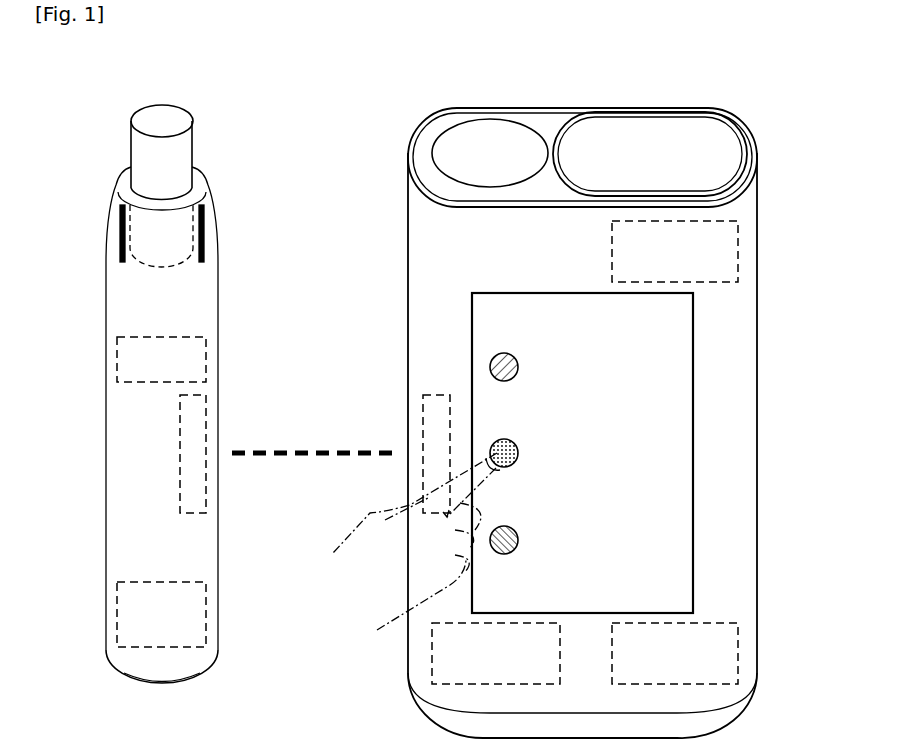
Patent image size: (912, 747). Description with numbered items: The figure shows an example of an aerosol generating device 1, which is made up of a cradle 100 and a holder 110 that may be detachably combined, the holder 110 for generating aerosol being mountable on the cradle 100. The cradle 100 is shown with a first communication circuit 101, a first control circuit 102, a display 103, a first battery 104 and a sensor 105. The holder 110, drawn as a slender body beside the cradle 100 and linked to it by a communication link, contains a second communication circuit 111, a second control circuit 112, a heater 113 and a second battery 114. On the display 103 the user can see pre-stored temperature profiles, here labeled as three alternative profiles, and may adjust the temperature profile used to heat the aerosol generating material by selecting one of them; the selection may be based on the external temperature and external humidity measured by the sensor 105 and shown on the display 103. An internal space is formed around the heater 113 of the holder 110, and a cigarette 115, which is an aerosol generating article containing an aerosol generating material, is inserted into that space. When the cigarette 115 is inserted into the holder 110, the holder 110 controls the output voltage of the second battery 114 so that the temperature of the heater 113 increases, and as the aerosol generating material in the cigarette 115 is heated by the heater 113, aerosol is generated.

The aerosol generating device 1 is at (307, 742).
The cradle 100 is at (600, 97).
The first communication circuit 101 is at (423, 405).
The first control circuit 102 is at (738, 250).
The display 103 is at (693, 453).
The first battery 104 is at (738, 653).
The sensor 105 is at (432, 653).
The holder 110 is at (200, 97).
The second communication circuit 111 is at (180, 453).
The second control circuit 112 is at (117, 358).
The heater 113 is at (120, 228).
The second battery 114 is at (117, 615).
The cigarette 115 is at (142, 154).